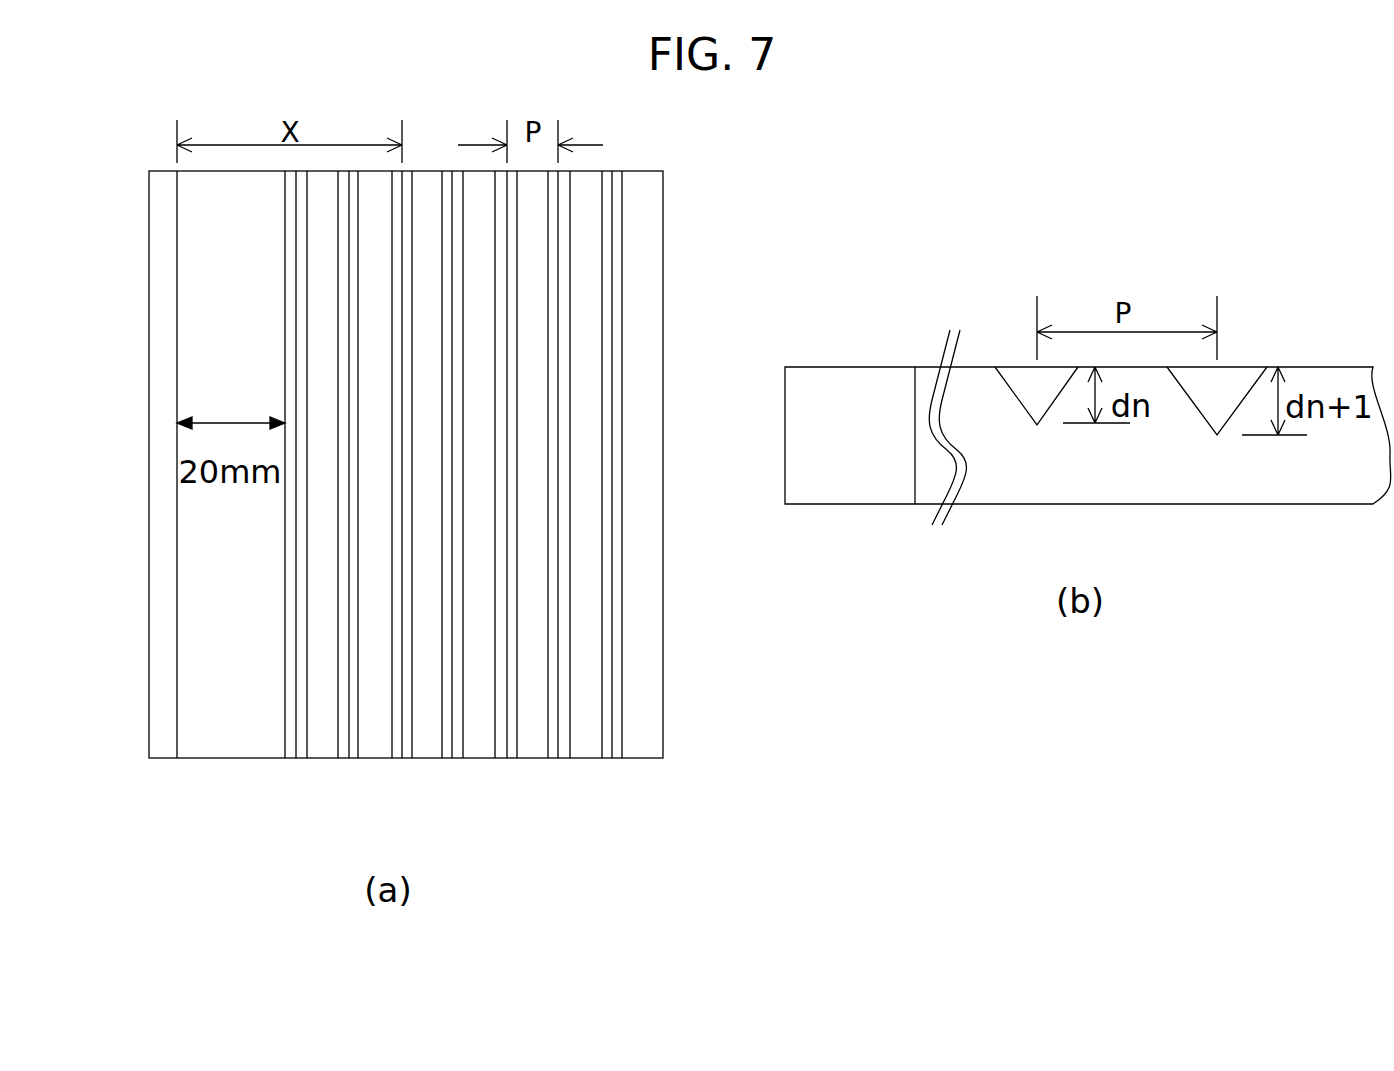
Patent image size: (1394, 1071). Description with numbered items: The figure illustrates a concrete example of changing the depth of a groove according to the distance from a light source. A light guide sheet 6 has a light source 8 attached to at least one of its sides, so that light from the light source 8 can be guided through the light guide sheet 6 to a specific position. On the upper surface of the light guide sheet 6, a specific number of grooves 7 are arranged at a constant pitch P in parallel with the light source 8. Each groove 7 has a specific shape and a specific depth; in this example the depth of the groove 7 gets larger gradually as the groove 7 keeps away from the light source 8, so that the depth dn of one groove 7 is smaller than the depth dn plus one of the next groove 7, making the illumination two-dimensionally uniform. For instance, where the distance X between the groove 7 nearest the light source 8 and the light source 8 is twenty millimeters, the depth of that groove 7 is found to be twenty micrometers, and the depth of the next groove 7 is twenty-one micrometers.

The light guide sheet 6 is at (215, 747).
The groove 7 is at (402, 752).
The light source 8 is at (150, 373).